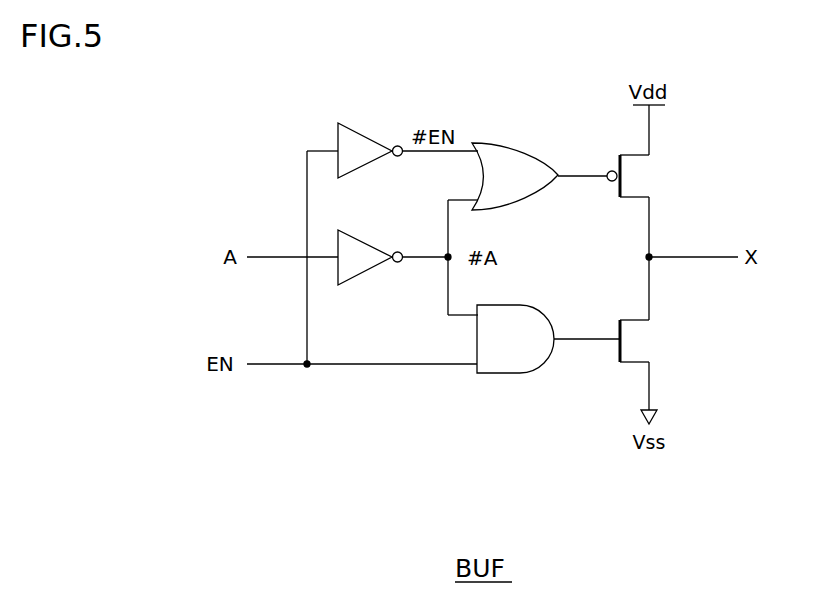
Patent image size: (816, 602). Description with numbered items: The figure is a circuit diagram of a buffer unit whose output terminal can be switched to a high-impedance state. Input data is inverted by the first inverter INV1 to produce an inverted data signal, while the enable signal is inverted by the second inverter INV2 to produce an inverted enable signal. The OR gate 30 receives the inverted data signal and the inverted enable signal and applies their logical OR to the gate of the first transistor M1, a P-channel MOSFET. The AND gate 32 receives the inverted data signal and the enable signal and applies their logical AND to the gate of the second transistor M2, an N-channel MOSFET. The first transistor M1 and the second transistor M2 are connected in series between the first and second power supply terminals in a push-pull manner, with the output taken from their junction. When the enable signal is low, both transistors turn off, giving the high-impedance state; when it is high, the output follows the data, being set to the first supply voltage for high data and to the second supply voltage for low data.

The OR gate 30 is at (530, 198).
The AND gate 32 is at (506, 375).
The first transistor M1 is at (653, 173).
The second transistor M2 is at (652, 341).
The first inverter INV1 is at (358, 278).
The second inverter INV2 is at (357, 131).